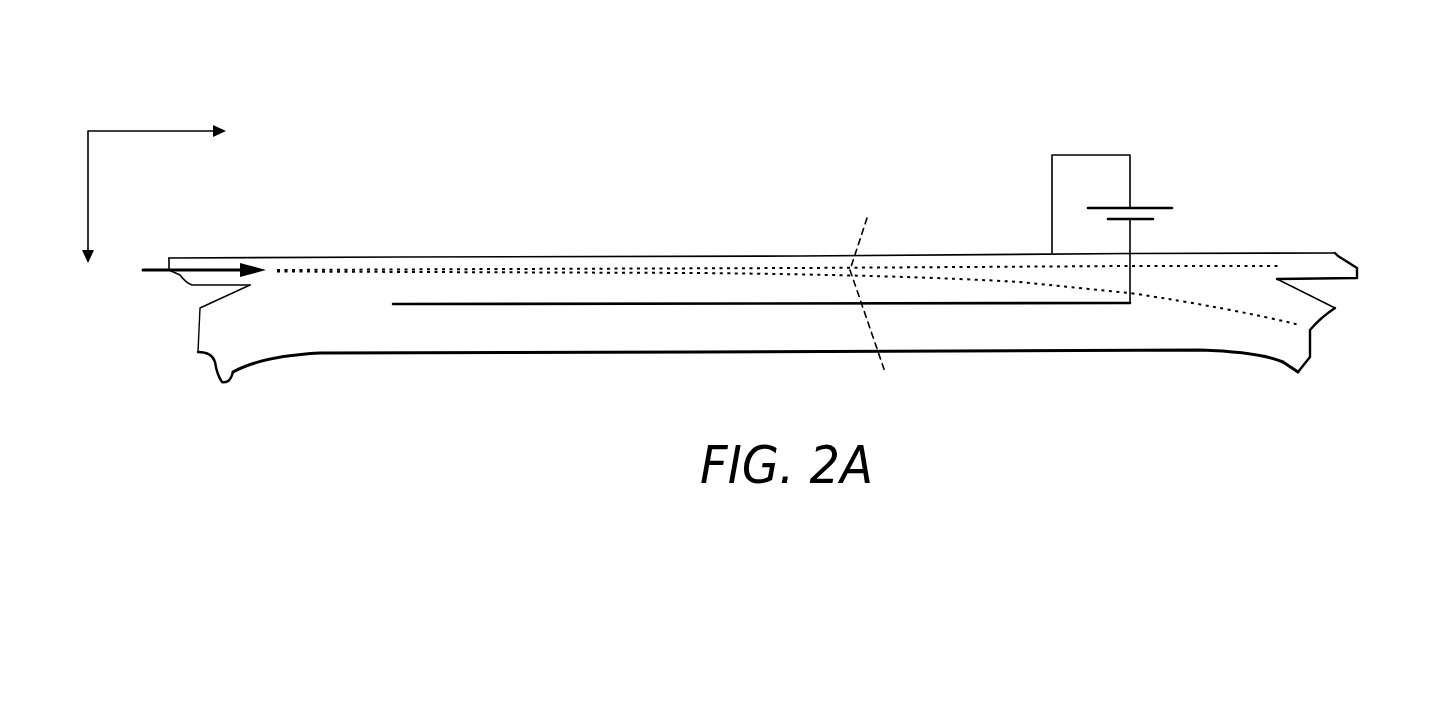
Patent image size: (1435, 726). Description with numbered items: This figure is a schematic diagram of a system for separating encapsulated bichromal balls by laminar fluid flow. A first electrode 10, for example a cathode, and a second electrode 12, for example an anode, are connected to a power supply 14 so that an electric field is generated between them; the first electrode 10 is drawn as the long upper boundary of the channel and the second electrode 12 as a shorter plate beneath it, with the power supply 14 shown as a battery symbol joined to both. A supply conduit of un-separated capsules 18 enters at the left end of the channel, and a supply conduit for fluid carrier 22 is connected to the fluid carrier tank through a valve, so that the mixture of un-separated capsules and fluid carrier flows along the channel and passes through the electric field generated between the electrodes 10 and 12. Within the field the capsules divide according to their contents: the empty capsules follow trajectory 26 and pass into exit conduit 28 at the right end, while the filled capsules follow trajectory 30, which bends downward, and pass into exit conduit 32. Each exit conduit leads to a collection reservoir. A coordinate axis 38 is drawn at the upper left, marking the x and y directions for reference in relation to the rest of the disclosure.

The first electrode 10 is at (772, 255).
The second electrode 12 is at (450, 303).
The power supply 14 is at (1152, 207).
The supply conduit of un-separated capsules 18 is at (202, 262).
The supply conduit for fluid carrier 22 is at (233, 355).
The trajectory of empty capsules 26 is at (868, 229).
The exit conduit for empty capsules 28 is at (1315, 263).
The trajectory of filled capsules 30 is at (883, 341).
The exit conduit for filled capsules 32 is at (1297, 318).
The coordinate axis 38 is at (131, 130).